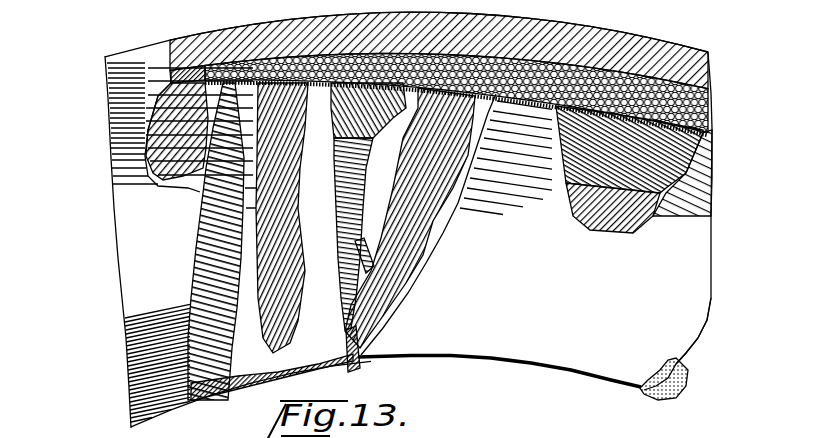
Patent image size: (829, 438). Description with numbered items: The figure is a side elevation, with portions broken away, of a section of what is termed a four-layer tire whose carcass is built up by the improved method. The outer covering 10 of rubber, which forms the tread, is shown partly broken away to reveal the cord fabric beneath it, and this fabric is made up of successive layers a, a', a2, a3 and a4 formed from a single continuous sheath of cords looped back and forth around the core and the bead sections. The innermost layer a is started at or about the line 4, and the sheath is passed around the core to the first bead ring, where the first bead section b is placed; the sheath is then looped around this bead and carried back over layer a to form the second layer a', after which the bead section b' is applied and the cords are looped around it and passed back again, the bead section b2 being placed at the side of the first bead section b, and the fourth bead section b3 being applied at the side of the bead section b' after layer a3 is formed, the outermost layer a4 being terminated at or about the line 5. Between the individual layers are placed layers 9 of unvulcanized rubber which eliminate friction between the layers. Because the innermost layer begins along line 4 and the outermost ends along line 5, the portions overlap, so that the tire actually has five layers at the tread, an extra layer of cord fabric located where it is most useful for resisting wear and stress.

The tread 10 is at (181, 20).
The layers of rubber 9 is at (167, 168).
The line 5 is at (160, 172).
The line 4 is at (557, 190).
The innermost layer a is at (545, 221).
The second layer a' is at (554, 206).
The layer a2 is at (723, 100).
The layer a3 is at (182, 281).
The layer a4 is at (724, 55).
The first bead section b is at (493, 363).
The bead section b' is at (667, 331).
The bead section b2 is at (263, 380).
The fourth bead section b3 is at (680, 360).